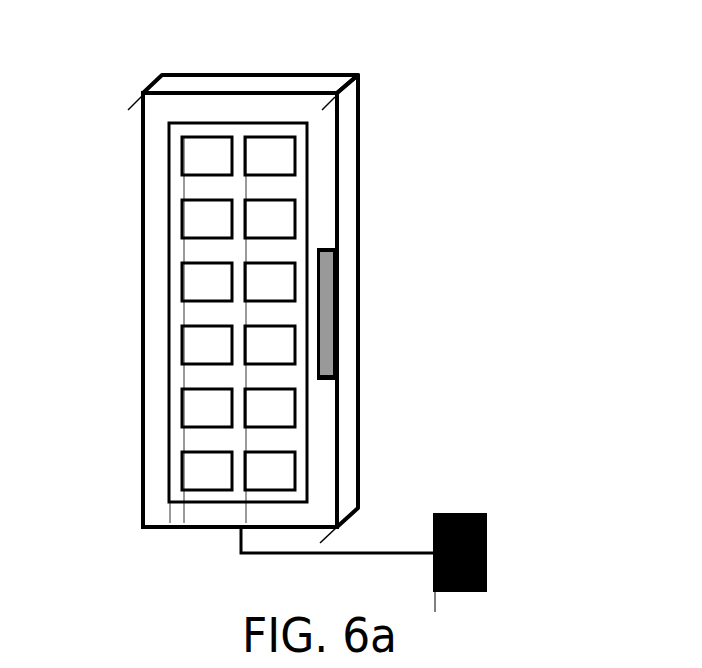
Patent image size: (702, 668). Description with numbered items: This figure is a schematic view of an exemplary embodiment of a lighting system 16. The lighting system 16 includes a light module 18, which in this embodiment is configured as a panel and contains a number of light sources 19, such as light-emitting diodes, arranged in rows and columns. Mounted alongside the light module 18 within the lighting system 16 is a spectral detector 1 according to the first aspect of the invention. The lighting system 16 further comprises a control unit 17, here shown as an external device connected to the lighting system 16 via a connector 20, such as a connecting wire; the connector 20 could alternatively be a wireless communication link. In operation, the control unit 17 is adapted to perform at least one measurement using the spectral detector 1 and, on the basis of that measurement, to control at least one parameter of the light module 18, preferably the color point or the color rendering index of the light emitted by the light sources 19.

The lighting system 16 is at (452, 76).
The light module 18 is at (168, 183).
The light sources 19 is at (181, 342).
The spectral detector 1 is at (340, 313).
The connector 20 is at (389, 508).
The control unit 17 is at (487, 552).